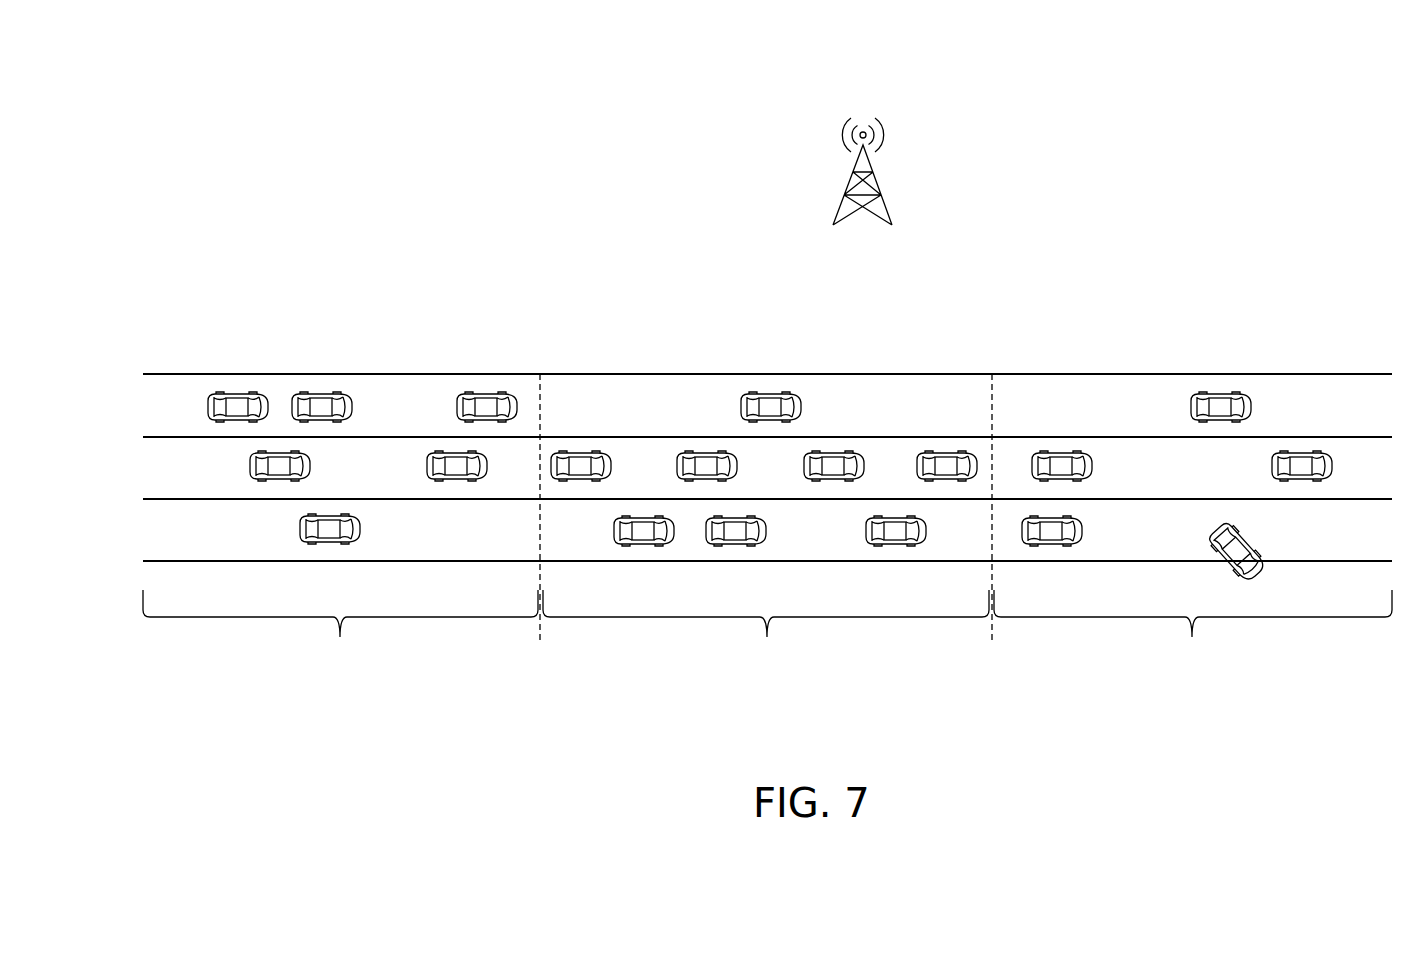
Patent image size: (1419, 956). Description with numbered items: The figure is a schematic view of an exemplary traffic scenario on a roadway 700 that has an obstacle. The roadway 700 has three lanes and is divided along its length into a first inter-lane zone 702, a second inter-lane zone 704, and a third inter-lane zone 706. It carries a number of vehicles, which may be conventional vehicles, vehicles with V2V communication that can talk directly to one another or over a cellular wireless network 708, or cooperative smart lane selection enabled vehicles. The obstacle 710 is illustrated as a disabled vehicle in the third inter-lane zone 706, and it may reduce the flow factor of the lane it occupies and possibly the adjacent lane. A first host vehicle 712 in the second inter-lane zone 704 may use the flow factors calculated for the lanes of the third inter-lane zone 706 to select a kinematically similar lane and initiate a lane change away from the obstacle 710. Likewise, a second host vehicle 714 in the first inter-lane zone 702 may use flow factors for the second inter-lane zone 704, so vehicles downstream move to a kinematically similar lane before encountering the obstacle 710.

The roadway 700 is at (278, 90).
The first inter-lane zone 702 is at (340, 631).
The second inter-lane zone 704 is at (766, 631).
The third inter-lane zone 706 is at (1193, 631).
The cellular wireless network 708 is at (877, 174).
The obstacle 710 is at (1246, 542).
The first host vehicle 712 is at (892, 548).
The second host vehicle 714 is at (362, 527).